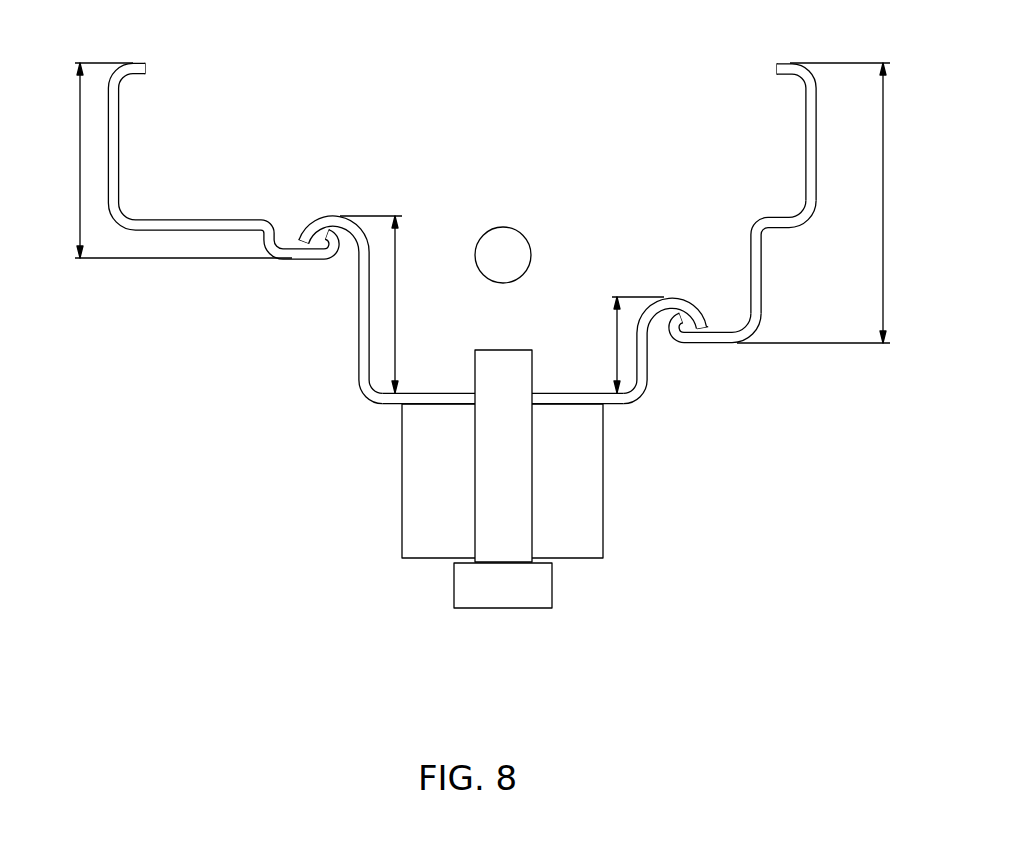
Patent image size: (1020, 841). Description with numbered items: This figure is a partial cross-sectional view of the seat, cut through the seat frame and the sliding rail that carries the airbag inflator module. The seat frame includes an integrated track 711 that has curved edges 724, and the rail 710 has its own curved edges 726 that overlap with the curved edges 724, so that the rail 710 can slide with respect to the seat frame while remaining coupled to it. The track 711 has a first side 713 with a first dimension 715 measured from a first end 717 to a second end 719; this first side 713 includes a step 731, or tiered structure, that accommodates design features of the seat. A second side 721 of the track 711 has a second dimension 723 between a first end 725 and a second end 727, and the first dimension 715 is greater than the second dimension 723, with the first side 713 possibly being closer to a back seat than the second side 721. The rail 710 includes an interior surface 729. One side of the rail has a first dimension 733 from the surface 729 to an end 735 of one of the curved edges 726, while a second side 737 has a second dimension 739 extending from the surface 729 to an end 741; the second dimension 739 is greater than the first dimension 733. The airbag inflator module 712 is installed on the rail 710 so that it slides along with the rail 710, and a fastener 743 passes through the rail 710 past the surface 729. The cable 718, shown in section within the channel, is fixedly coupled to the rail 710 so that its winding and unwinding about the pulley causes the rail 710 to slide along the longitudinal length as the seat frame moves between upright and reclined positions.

The rail 710 is at (392, 405).
The integrated track 711 is at (818, 138).
The airbag inflator module 712 is at (582, 560).
The first side of the track 713 is at (807, 221).
The first dimension of the track 715 is at (885, 183).
The first end of the first side 717 is at (778, 63).
The cable 718 is at (516, 231).
The second end of the first side 719 is at (713, 343).
The second side of the track 721 is at (120, 147).
The second dimension of the track 723 is at (78, 133).
The curved edges of the track 724 is at (678, 334).
The first end of the second side 725 is at (143, 63).
The curved edges of the rail 726 is at (670, 297).
The second end of the second side 727 is at (302, 260).
The interior surface of the rail 729 is at (567, 380).
The step 731 is at (767, 234).
The first dimension of the rail 733 is at (616, 357).
The end of the curved edge 735 is at (688, 297).
The second side of the rail 737 is at (357, 360).
The second dimension of the rail 739 is at (396, 295).
The end of the second side 741 is at (332, 215).
The fastener 743 is at (509, 518).